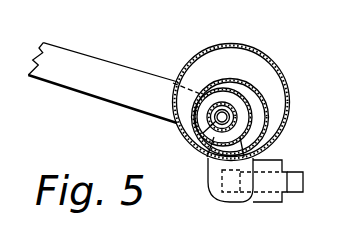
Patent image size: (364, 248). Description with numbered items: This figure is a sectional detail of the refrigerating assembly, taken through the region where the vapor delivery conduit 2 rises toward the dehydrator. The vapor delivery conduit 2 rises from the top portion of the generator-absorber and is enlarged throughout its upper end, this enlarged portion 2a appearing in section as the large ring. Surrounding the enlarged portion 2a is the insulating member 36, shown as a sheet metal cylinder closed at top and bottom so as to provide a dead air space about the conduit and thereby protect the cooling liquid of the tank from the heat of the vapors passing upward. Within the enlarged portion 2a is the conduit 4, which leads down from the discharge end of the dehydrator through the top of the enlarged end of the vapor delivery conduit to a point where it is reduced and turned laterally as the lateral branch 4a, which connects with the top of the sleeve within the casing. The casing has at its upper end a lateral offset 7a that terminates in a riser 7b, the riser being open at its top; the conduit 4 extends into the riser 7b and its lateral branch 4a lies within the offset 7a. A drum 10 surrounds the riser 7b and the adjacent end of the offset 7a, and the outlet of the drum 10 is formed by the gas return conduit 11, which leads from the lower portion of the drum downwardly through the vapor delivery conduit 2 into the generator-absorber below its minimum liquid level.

The lateral offset 7a is at (98, 68).
The insulating member 36 is at (279, 60).
The enlarged upper end of the vapor delivery conduit 2a is at (262, 96).
The conduit 4 is at (270, 142).
The riser 7b is at (229, 121).
The drum 10 is at (229, 96).
The lateral branch of the conduit 4a is at (195, 147).
The vapor delivery conduit 2 is at (232, 202).
The gas return conduit 11 is at (305, 183).